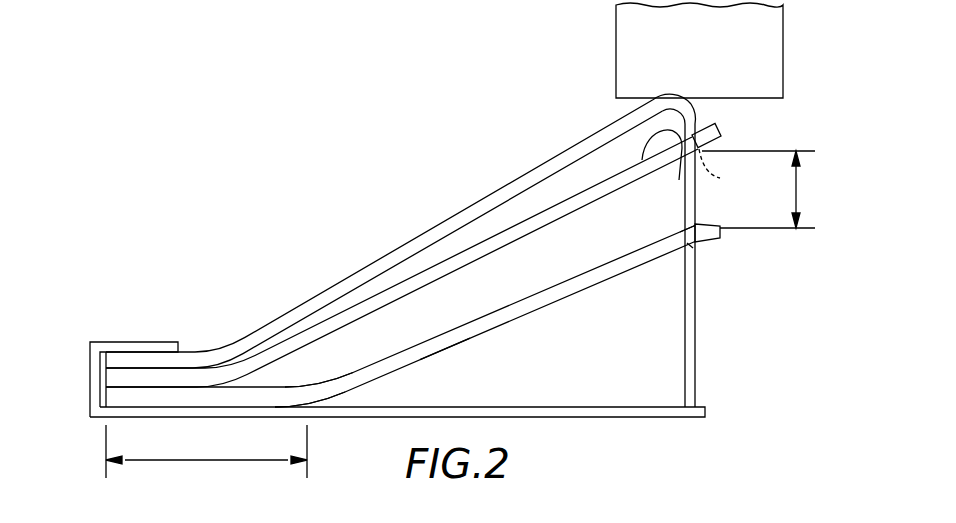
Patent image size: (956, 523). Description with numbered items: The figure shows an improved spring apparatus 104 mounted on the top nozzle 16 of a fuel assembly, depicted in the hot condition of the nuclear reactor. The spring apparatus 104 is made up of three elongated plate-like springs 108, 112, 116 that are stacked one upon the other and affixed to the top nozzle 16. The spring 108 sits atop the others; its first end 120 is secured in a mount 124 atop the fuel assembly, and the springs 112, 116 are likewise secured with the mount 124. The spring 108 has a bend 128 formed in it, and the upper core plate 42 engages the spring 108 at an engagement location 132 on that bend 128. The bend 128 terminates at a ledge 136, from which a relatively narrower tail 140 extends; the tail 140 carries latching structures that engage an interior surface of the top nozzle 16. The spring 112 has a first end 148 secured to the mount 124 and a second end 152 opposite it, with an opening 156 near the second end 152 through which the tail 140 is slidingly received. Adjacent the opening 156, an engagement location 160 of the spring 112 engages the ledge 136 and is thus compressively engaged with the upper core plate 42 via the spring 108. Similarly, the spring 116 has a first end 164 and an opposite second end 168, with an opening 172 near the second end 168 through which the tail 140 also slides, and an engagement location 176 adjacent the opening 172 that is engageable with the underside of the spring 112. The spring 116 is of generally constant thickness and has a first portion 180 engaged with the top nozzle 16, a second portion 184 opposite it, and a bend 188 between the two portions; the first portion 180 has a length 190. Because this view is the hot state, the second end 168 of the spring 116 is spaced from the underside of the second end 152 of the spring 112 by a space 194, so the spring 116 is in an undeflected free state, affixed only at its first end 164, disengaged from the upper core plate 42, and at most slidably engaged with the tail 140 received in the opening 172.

The top nozzle 16 is at (572, 408).
The upper core plate 42 is at (783, 27).
The spring apparatus 104 is at (409, 244).
The spring 108 is at (505, 185).
The spring 112 is at (567, 200).
The spring 116 is at (537, 290).
The first end 120 is at (113, 362).
The mount 124 is at (101, 342).
The bend 128 is at (689, 111).
The engagement location 132 is at (653, 97).
The ledge 136 is at (680, 160).
The tail 140 is at (697, 393).
The first end 148 is at (115, 380).
The second end 152 is at (720, 129).
The opening 156 is at (728, 172).
The engagement location 160 is at (661, 128).
The first end 164 is at (110, 394).
The second end 168 is at (723, 234).
The opening 172 is at (690, 250).
The engagement location 176 is at (692, 230).
The first portion 180 is at (273, 397).
The second portion 184 is at (440, 350).
The bend 188 is at (313, 393).
The length 190 is at (204, 460).
The space 194 is at (800, 188).